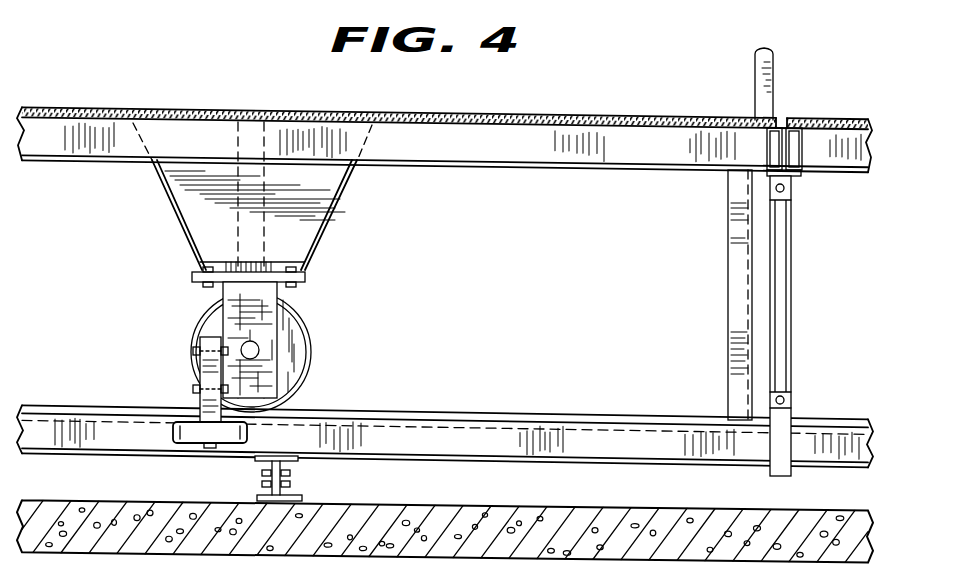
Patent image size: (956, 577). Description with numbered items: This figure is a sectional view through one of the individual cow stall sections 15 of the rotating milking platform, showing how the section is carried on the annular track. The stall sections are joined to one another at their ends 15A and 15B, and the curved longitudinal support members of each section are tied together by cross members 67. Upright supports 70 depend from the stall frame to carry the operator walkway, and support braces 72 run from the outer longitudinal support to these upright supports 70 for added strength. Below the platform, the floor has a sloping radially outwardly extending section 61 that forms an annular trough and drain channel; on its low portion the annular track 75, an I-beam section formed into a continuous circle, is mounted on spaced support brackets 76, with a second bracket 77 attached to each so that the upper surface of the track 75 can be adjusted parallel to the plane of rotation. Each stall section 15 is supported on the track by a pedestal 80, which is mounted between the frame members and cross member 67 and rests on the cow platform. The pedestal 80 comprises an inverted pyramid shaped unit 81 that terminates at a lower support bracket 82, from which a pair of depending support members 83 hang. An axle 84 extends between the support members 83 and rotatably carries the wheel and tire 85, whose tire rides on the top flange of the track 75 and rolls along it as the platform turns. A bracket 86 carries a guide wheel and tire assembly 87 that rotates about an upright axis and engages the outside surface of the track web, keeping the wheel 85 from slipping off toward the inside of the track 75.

The cow stall section 15 is at (572, 113).
The stall section end 15A is at (777, 120).
The stall section end 15B is at (796, 122).
The sloping radially outwardly extending floor section 61 is at (102, 512).
The cross member 67 is at (775, 153).
The walkway support 70 is at (262, 137).
The support brace 72 is at (782, 332).
The annular track 75 is at (588, 433).
The support bracket 76 is at (279, 478).
The second bracket 77 is at (265, 462).
The pedestal 80 is at (250, 216).
The inverted pyramid shaped unit 81 is at (178, 222).
The lower support bracket 82 is at (300, 278).
The depending support member 83 is at (258, 292).
The axle 84 is at (259, 351).
The wheel and tire 85 is at (306, 378).
The bracket 86 is at (210, 338).
The guide wheel and tire assembly 87 is at (194, 428).